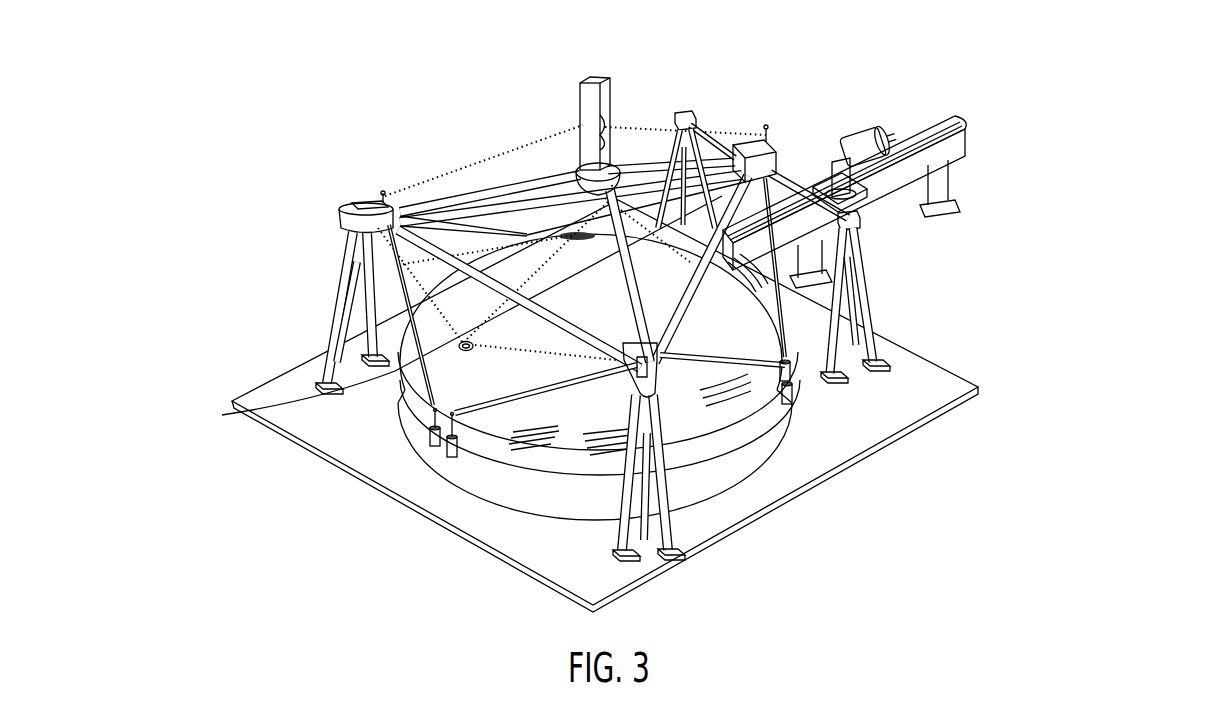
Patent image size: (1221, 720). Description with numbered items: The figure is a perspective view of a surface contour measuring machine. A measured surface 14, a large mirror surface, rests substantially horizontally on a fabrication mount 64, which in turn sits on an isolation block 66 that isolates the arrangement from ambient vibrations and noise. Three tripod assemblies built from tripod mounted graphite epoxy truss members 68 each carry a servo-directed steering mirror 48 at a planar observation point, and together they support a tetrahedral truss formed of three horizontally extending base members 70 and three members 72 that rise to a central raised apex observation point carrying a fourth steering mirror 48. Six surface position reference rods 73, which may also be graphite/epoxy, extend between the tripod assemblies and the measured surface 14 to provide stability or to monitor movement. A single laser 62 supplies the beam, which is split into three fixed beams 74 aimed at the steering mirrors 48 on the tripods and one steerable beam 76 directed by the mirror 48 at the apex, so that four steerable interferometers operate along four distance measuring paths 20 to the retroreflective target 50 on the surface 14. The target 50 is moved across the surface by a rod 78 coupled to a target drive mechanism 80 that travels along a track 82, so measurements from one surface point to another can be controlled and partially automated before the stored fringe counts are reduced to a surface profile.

The measured surface 14 is at (400, 479).
The distance measuring path 20 is at (475, 325).
The servo-directed steering mirror 48 is at (786, 135).
The retroreflective target 50 is at (272, 403).
The laser 62 is at (612, 78).
The fabrication mount 64 is at (497, 503).
The isolation block 66 is at (915, 424).
The tripod mounted graphite epoxy truss members 68 is at (838, 305).
The horizontally extending base members 70 is at (480, 205).
The members 72 is at (520, 177).
The surface position reference rods 73 is at (437, 398).
The fixed beams 74 is at (417, 177).
The steerable beam 76 is at (533, 248).
The rod 78 is at (647, 257).
The target drive mechanism 80 is at (817, 160).
The track 82 is at (952, 142).